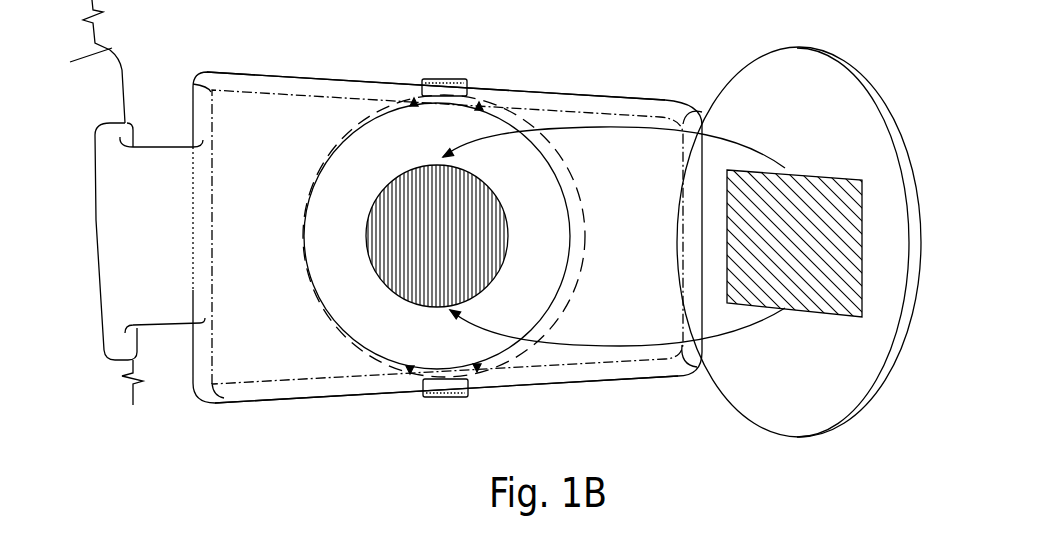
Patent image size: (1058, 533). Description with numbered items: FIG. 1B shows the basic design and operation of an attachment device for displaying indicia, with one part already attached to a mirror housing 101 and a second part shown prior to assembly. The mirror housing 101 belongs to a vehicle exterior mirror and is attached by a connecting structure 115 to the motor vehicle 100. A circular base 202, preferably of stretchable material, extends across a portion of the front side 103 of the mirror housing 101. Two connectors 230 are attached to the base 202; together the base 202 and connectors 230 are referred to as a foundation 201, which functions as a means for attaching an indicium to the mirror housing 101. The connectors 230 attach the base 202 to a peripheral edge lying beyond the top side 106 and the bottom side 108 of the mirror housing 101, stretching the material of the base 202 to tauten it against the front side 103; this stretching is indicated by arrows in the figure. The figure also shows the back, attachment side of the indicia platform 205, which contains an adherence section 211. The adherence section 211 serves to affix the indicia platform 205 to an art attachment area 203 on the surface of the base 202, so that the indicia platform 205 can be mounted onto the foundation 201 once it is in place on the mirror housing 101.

The motor vehicle 100 is at (112, 48).
The mirror housing 101 is at (303, 412).
The front side 103 is at (252, 370).
The top side 106 is at (620, 95).
The bottom side 108 is at (645, 378).
The connecting structure 115 is at (158, 136).
The foundation 201 is at (372, 16).
The base 202 is at (307, 250).
The art attachment area 203 is at (482, 235).
The indicia platform 205 is at (830, 72).
The adherence section 211 is at (840, 194).
The connectors 230 is at (463, 80).